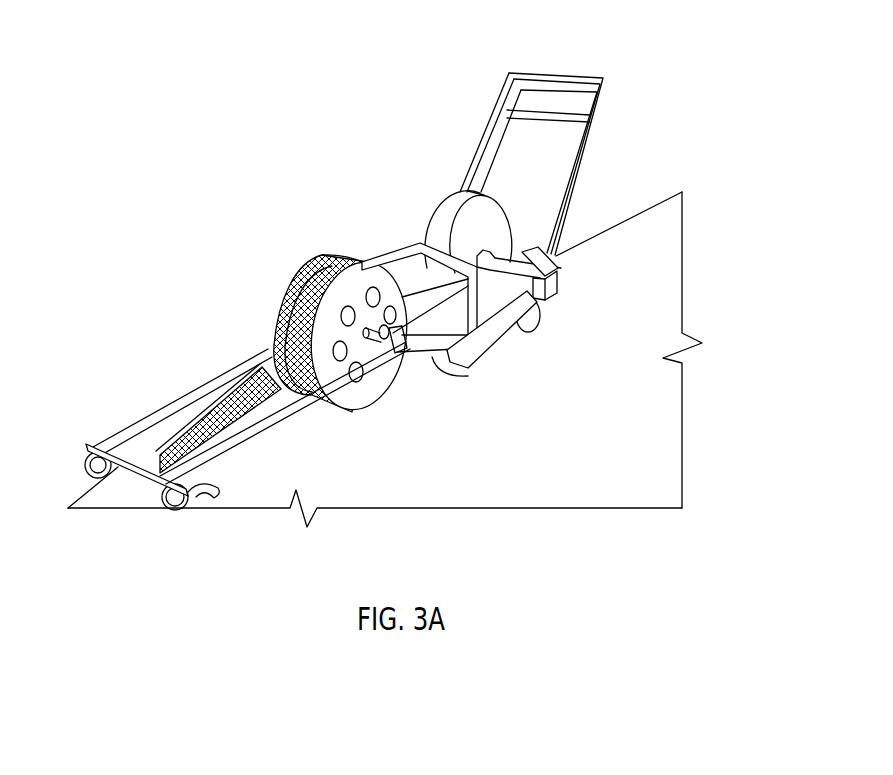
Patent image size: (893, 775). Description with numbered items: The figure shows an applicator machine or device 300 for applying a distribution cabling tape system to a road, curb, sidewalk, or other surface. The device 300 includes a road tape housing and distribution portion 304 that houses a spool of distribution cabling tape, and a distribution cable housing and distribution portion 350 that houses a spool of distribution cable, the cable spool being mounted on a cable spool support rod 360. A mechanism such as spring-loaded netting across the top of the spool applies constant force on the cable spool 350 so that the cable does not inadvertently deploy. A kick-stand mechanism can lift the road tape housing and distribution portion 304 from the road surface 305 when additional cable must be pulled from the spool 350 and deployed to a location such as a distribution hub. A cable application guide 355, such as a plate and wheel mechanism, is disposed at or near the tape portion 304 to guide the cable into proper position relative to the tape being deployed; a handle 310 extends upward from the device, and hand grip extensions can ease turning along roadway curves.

The applicator machine or device 300 is at (412, 76).
The road tape housing and distribution portion 304 is at (513, 277).
The road surface 305 is at (573, 453).
The handle 310 is at (563, 257).
The distribution cable housing and distribution portion 350 is at (396, 315).
The cable application guide 355 is at (468, 376).
The cable spool support rod 360 is at (406, 353).